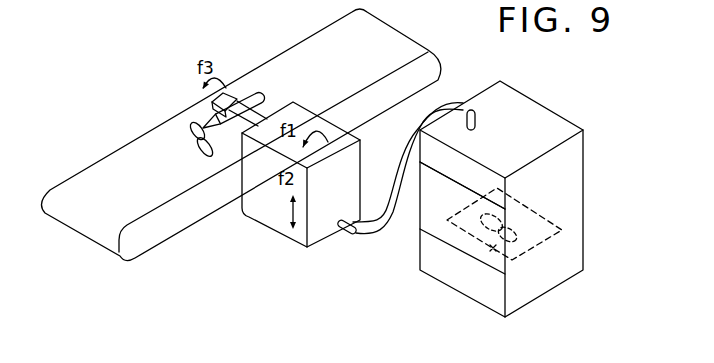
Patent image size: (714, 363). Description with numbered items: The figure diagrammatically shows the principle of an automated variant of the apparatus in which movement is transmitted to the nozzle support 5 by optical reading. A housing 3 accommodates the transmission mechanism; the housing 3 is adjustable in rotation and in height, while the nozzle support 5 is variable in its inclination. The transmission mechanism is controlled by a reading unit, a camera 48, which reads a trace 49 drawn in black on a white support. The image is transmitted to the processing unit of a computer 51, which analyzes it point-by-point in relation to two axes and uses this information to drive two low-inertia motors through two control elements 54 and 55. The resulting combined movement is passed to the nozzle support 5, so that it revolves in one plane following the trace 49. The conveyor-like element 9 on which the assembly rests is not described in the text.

The housing 3 is at (268, 223).
The nozzle support 5 is at (235, 102).
The conveyor table 9 is at (151, 133).
The camera 48 is at (452, 170).
The trace 49 is at (496, 247).
The computer 51 is at (498, 211).
The control element 54 is at (462, 185).
The control element 55 is at (485, 290).